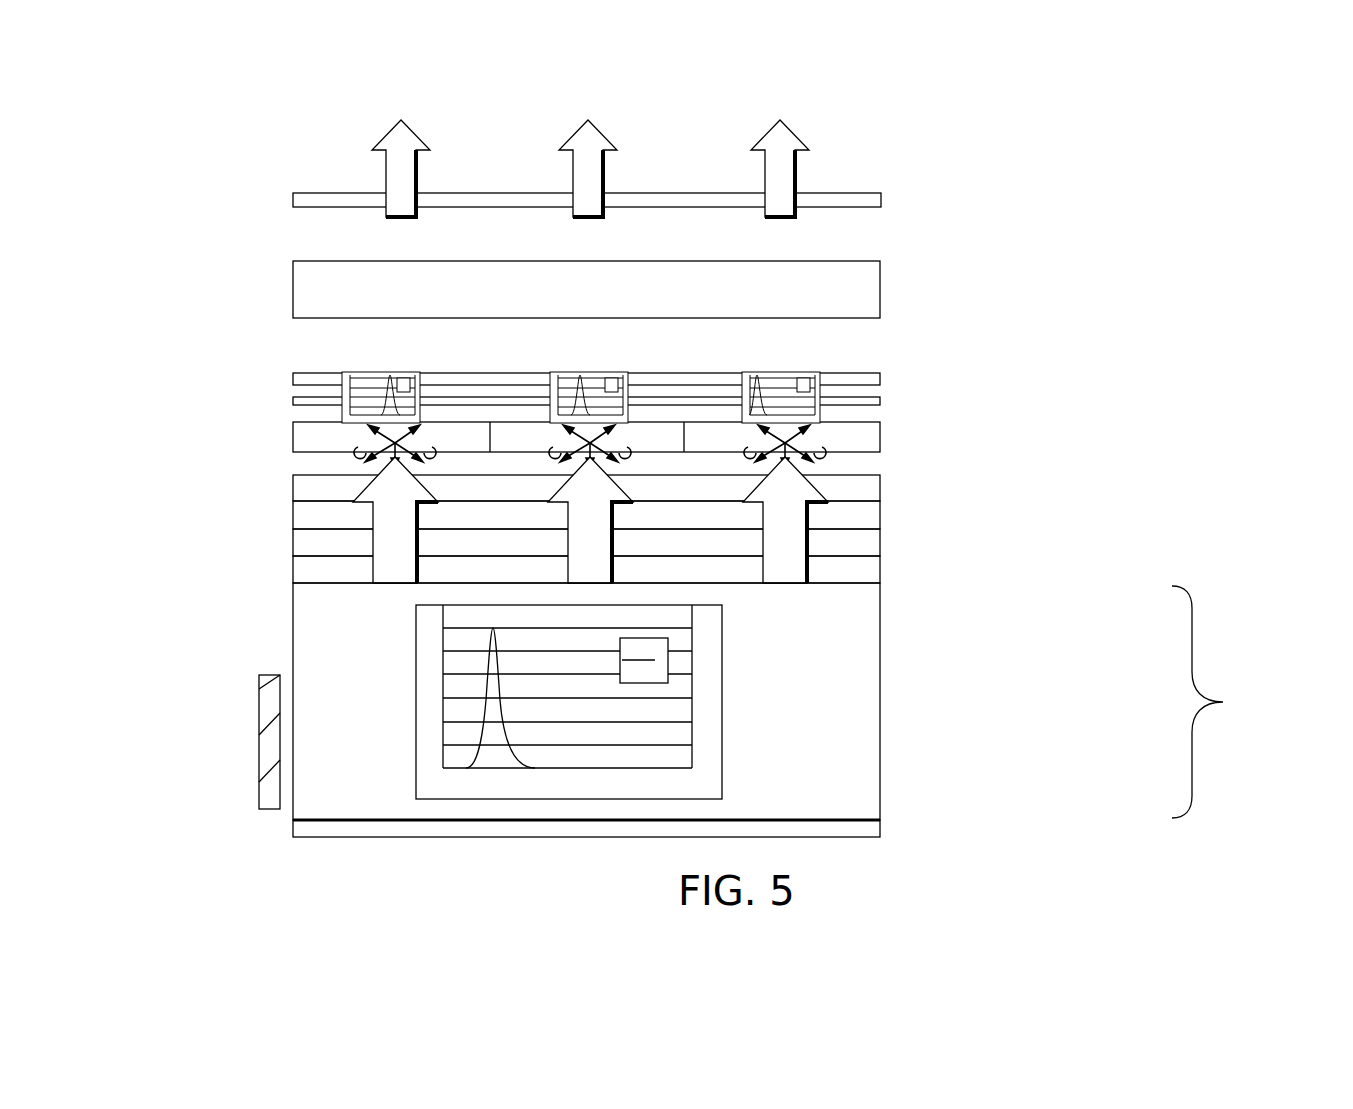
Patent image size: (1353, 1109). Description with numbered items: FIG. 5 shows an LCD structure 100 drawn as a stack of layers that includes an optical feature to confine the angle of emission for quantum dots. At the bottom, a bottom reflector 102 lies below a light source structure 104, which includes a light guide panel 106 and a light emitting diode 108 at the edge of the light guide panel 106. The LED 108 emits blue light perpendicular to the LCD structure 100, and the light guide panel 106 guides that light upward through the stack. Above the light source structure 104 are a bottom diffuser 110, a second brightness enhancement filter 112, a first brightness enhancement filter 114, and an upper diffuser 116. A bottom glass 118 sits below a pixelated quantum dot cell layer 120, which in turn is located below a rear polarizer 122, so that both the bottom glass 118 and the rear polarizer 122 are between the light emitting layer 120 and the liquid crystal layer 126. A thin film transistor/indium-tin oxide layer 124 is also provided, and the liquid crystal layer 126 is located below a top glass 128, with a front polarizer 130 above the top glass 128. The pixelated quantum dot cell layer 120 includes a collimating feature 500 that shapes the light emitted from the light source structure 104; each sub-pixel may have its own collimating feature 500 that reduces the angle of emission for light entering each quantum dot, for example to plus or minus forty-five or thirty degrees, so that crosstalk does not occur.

The LCD structure 100 is at (1272, 132).
The bottom reflector 102 is at (880, 830).
The light source structure 104 is at (1223, 702).
The light guide panel 106 is at (880, 720).
The light emitting diode (LED) 108 is at (258, 740).
The bottom diffuser 110 is at (880, 570).
The second brightness enhancement filter (BEF2) 112 is at (880, 545).
The first brightness enhancement filter (BEF1) 114 is at (880, 518).
The upper diffuser 116 is at (880, 490).
The bottom glass 118 is at (880, 395).
The pixelated quantum dot cell layer 120 is at (880, 452).
The rear polarizer 122 is at (880, 403).
The thin film transistor (TFT)/indium-tin oxide (ITO) layer 124 is at (880, 373).
The liquid crystal layer 126 is at (880, 288).
The top glass 128 is at (878, 241).
The front polarizer 130 is at (882, 200).
The collimating feature 500 is at (289, 452).